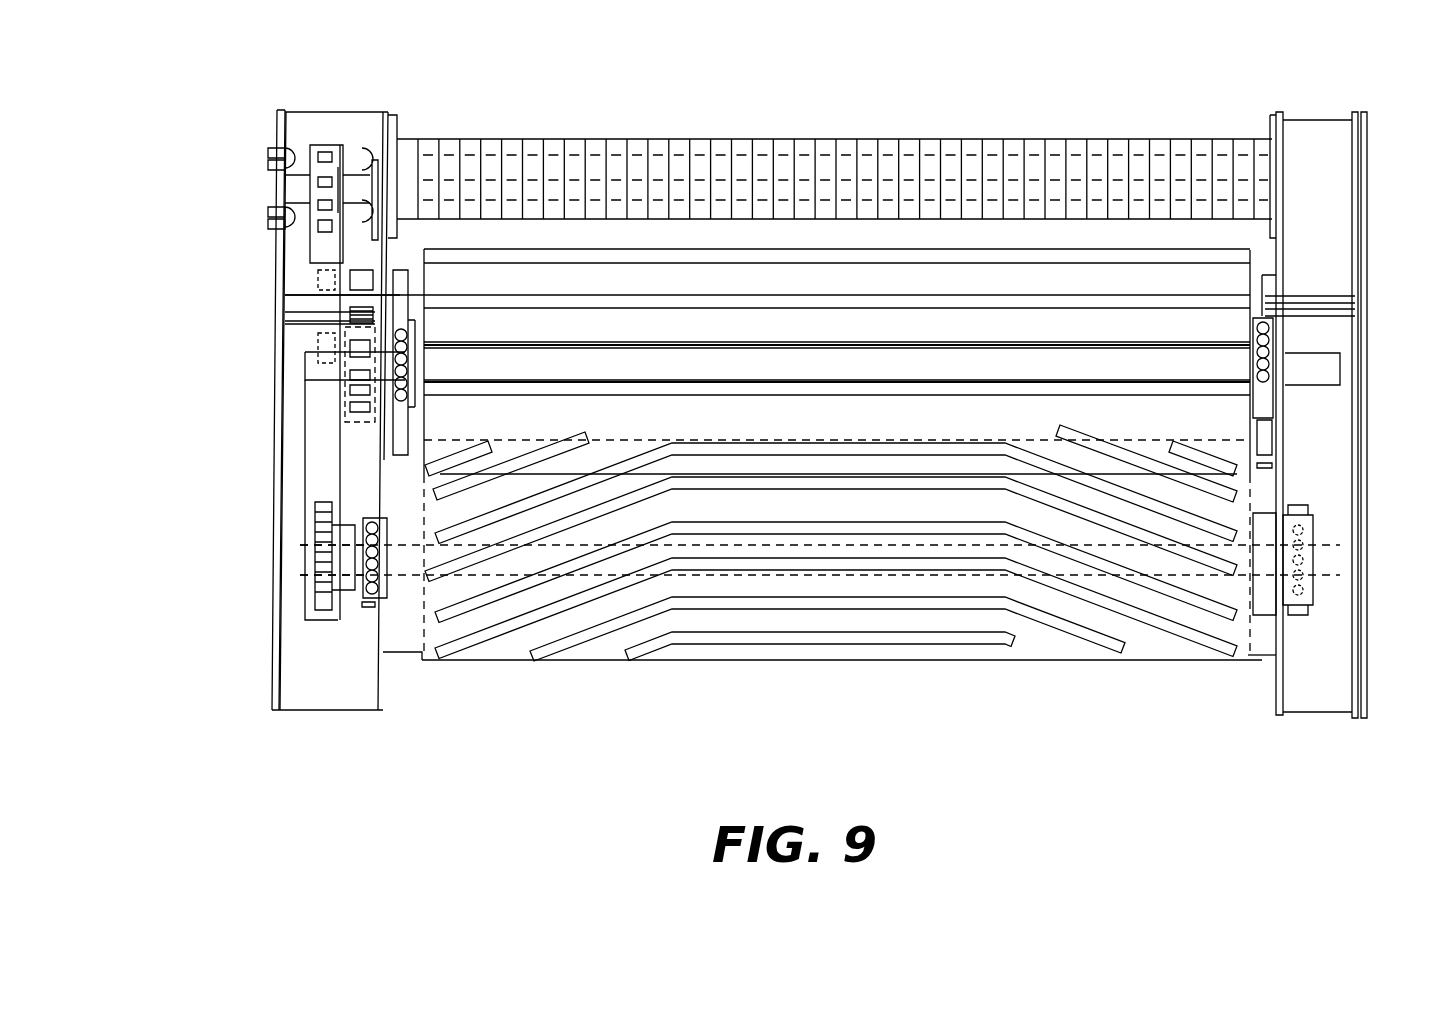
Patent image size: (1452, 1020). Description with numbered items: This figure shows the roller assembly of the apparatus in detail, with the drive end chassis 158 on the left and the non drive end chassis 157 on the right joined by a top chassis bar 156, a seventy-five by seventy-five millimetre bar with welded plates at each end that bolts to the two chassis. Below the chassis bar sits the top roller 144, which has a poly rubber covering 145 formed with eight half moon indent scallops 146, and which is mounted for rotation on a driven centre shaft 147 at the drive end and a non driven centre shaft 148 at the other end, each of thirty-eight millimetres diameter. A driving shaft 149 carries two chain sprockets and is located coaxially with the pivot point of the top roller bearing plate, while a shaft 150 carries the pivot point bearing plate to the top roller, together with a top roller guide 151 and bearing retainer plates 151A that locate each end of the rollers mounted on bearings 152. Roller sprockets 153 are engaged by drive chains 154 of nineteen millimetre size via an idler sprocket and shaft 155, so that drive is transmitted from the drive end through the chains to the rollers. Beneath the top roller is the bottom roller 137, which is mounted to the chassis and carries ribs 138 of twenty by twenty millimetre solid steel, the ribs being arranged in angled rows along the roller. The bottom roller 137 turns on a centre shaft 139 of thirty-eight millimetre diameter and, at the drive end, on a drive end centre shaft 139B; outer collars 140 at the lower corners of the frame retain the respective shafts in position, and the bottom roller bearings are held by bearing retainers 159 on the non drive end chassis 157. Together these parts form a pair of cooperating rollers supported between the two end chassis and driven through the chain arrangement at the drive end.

The bottom roller 137 is at (880, 590).
The ribs 138 is at (720, 648).
The centre shaft 139 is at (1340, 568).
The drive end centre shaft 139B is at (300, 565).
The outer collars 140 is at (405, 650).
The top roller 144 is at (674, 337).
The poly rubber covering 145 is at (777, 296).
The half moon indent scallops 146 is at (512, 310).
The driven centre shaft 147 is at (318, 367).
The non driven centre shaft 148 is at (1340, 370).
The driving shaft 149 is at (330, 300).
The shaft 150 is at (1365, 305).
The top roller guide 151 is at (400, 278).
The bearing retainer plates 151A is at (1265, 290).
The bearings 152 is at (400, 395).
The roller sprockets 153 is at (355, 405).
The drive chains 154 is at (318, 470).
The idler sprocket and shaft 155 is at (305, 185).
The top chassis bar 156 is at (540, 142).
The non drive end chassis 157 is at (1320, 115).
The drive end chassis 158 is at (332, 112).
The bearing retainers 159 is at (1295, 612).